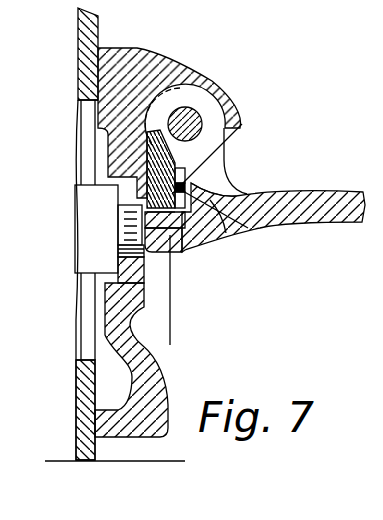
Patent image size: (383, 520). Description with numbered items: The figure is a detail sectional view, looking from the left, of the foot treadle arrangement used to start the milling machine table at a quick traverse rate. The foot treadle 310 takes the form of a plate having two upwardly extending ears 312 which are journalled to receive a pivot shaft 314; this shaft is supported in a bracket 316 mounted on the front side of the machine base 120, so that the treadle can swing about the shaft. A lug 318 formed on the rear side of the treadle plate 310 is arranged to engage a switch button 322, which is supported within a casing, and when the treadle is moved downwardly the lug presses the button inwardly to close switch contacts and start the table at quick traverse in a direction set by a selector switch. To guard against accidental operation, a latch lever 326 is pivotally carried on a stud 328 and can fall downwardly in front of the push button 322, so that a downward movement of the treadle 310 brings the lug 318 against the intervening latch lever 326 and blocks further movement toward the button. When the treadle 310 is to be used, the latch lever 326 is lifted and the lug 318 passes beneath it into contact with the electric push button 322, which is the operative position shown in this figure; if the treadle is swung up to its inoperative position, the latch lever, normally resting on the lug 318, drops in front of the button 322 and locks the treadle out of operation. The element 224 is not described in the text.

The base 120 is at (88, 442).
The bolt head 224 is at (86, 226).
The foot treadle 310 is at (337, 190).
The upwardly extending ears 312 is at (224, 166).
The pivot shaft 314 is at (192, 121).
The bracket 316 is at (178, 67).
The lug 318 is at (157, 245).
The switch button 322 is at (148, 255).
The latch lever 326 is at (232, 230).
The stud 328 is at (179, 238).